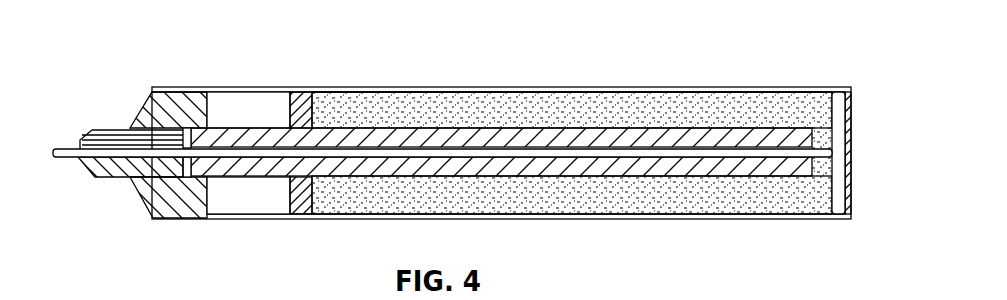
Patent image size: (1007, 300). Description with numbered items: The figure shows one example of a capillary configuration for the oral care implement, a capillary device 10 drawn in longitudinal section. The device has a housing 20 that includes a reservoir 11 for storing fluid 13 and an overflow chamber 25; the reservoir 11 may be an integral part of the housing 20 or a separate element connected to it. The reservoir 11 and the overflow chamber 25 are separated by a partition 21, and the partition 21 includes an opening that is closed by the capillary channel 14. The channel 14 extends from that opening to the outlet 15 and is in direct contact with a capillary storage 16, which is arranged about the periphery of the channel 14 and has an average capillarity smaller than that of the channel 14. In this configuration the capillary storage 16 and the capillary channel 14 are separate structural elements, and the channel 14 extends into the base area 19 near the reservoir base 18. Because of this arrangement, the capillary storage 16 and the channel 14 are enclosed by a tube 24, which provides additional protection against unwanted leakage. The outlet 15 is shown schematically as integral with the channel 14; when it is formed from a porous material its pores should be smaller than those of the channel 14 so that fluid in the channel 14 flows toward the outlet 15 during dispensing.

The capillary device 10 is at (114, 40).
The reservoir 11 is at (673, 86).
The fluid 13 is at (775, 102).
The capillary channel 14 is at (245, 160).
The outlet 15 is at (65, 157).
The capillary storage 16 is at (640, 177).
The reservoir base 18 is at (858, 120).
The base area 19 is at (835, 203).
The housing 20 is at (182, 88).
The partition 21 is at (298, 100).
The tube 24 is at (402, 128).
The overflow chamber 25 is at (250, 100).